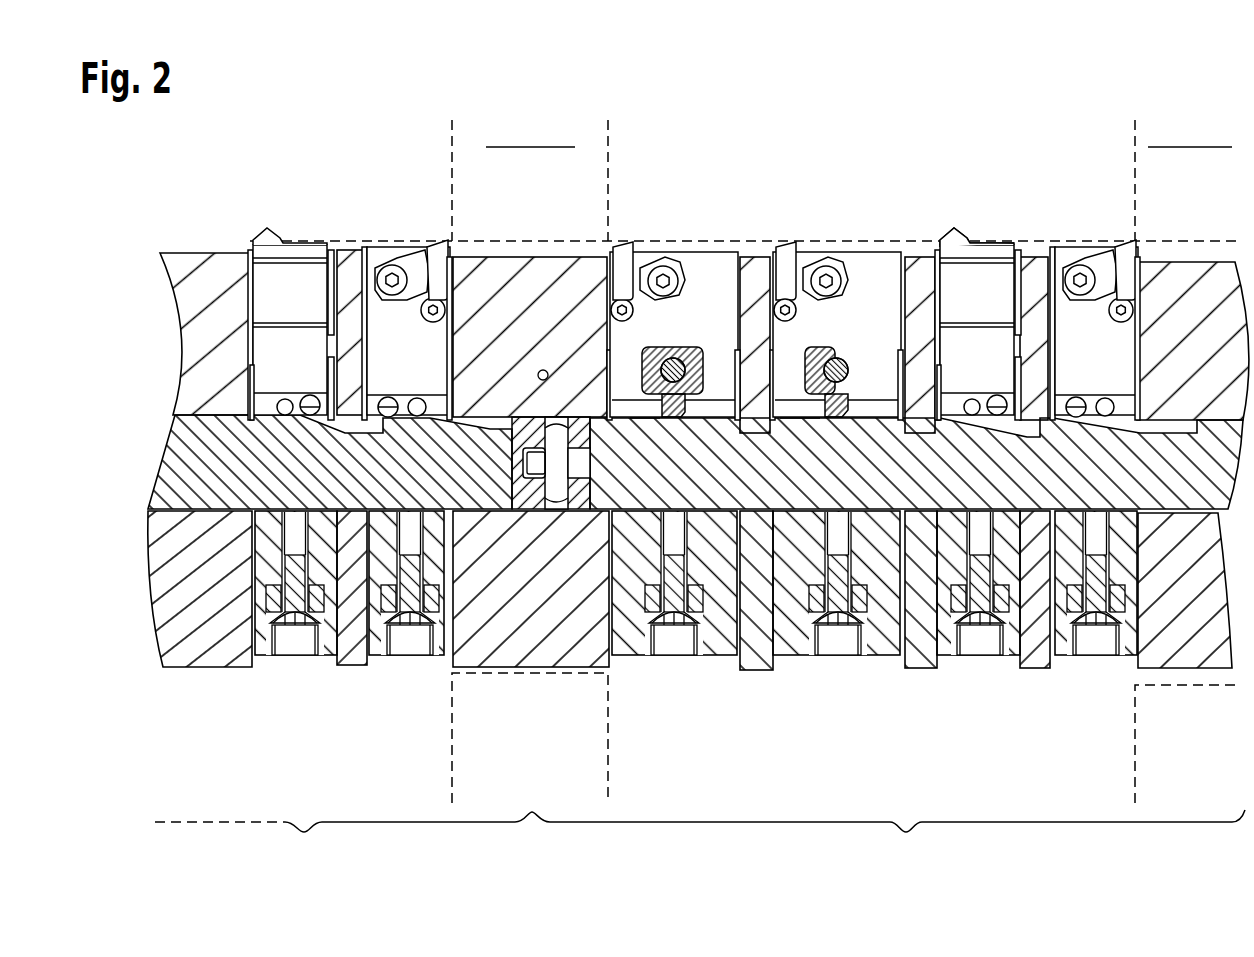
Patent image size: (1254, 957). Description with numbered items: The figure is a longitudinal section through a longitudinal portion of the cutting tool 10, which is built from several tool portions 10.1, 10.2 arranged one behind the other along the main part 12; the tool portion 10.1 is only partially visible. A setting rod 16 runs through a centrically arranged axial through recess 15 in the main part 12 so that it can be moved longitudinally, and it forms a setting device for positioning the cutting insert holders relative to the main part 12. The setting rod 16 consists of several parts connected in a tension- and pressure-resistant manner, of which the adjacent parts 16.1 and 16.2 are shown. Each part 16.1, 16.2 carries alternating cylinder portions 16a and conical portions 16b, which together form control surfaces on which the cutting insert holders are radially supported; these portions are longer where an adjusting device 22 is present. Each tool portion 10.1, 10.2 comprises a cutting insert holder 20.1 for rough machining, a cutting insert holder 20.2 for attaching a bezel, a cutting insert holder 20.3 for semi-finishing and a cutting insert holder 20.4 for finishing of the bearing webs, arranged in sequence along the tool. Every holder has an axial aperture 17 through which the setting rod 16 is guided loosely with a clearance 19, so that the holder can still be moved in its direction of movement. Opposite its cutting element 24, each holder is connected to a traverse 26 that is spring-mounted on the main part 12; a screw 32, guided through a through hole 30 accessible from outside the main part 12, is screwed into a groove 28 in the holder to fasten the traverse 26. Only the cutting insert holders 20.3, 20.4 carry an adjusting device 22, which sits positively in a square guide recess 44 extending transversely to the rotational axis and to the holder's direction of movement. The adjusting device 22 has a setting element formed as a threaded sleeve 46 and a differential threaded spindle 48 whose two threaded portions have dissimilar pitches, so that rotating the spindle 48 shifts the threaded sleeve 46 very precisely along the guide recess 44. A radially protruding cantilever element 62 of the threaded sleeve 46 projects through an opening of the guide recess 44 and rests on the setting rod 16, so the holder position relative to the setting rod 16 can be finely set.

The cutting tool 10 is at (190, 170).
The tool portion 10.1 is at (407, 839).
The tool portion 10.2 is at (888, 838).
The main part 12 is at (521, 643).
The axial through recess 15 is at (218, 498).
The setting rod 16 is at (717, 611).
The part of the setting rod 16.1 is at (1040, 487).
The part of the setting rod 16.2 is at (353, 480).
The cylinder portion 16a is at (622, 417).
The conical portion 16b is at (923, 255).
The axial aperture 17 is at (636, 509).
The clearance 19 is at (641, 414).
The cutting insert holder for rough machining 20.1 is at (428, 205).
The cutting insert holder for attaching a bezel 20.2 is at (283, 203).
The cutting insert holder for semi-finishing 20.3 is at (643, 273).
The cutting insert holder for finishing 20.4 is at (785, 205).
The adjusting device 22 is at (689, 330).
The cutting element 24 is at (630, 235).
The traverse 26 is at (703, 612).
The groove 28 is at (690, 535).
The through hole 30 is at (693, 636).
The screw 32 is at (677, 592).
The guide recess 44 is at (721, 375).
The threaded sleeve 46 is at (808, 347).
The differential threaded spindle 48 is at (853, 328).
The cantilever element 62 is at (846, 417).